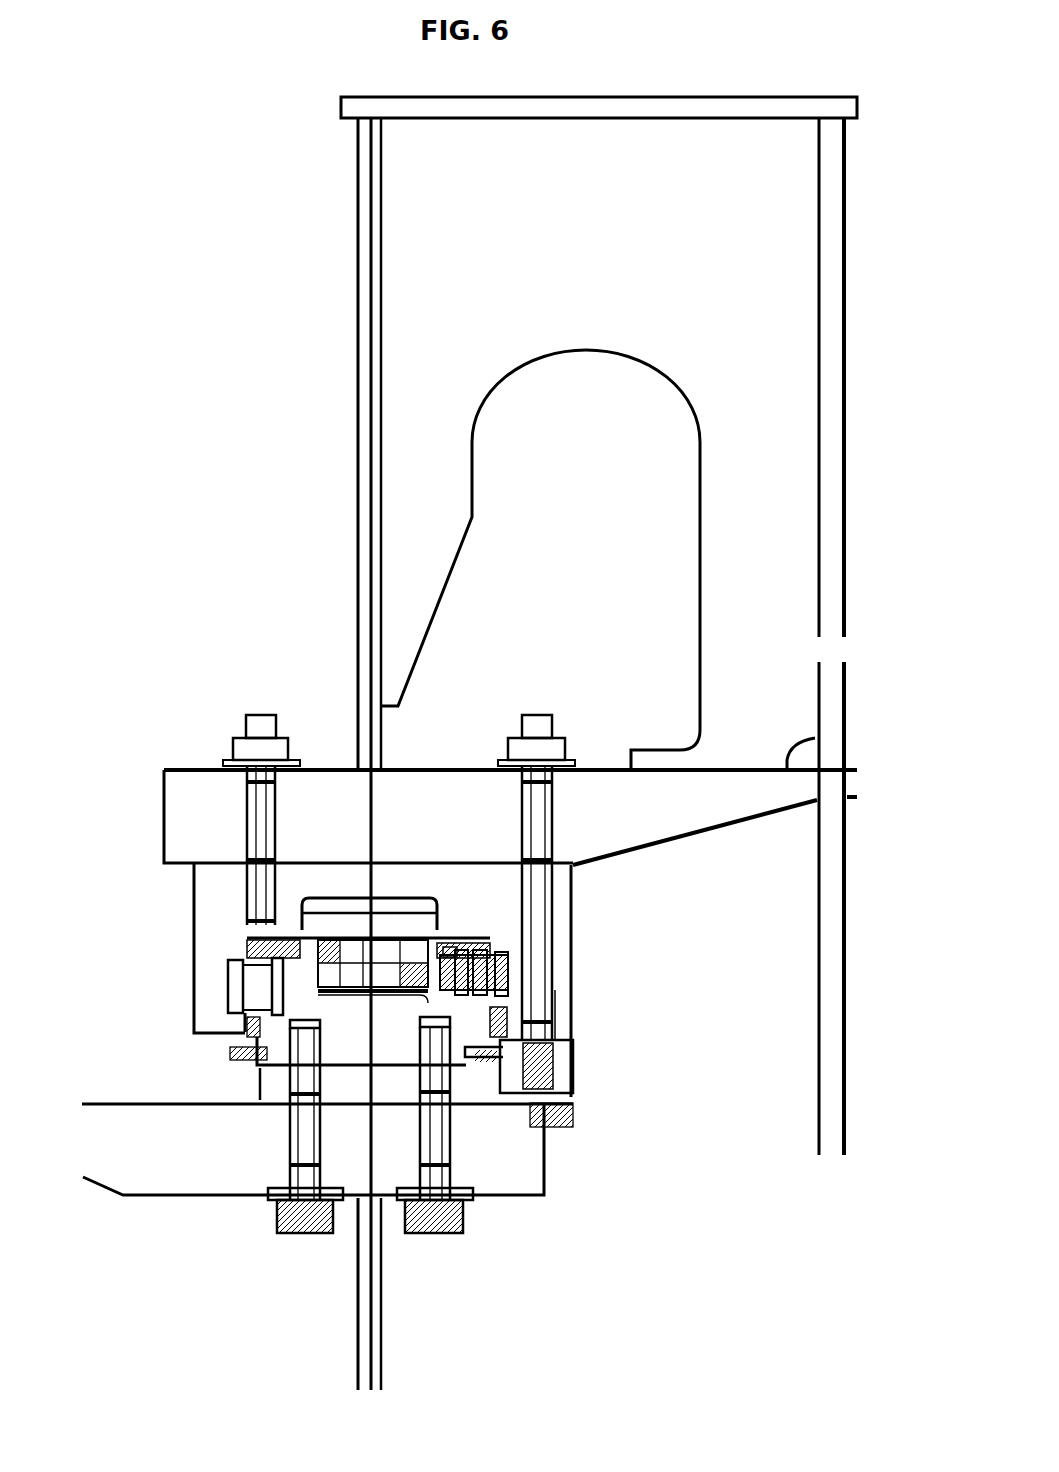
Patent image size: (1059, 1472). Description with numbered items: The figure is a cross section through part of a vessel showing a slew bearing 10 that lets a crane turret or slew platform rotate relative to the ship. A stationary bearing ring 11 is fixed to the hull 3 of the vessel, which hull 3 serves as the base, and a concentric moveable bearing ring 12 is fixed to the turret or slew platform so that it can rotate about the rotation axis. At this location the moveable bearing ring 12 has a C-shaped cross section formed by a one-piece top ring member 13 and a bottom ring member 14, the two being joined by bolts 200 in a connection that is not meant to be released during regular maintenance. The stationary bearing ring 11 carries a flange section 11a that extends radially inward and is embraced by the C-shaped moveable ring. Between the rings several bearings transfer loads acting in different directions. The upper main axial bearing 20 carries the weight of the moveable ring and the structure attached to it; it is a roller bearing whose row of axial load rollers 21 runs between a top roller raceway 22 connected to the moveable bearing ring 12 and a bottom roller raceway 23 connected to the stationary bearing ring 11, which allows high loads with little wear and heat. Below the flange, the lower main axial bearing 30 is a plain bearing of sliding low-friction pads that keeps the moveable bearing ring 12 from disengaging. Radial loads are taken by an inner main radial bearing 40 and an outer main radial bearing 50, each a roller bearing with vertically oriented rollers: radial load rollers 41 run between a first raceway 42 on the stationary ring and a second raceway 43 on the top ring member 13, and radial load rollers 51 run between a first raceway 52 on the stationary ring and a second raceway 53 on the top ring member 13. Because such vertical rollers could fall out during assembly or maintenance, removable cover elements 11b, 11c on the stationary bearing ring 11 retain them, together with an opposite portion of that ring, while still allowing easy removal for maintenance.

The hull 3 is at (210, 1173).
The slew bearing 10 is at (148, 720).
The stationary bearing ring 11 is at (390, 1080).
The flange section 11a is at (478, 1032).
The removable cover element 11b is at (472, 953).
The removable cover element 11c is at (262, 957).
The moveable bearing ring 12 is at (210, 878).
The top ring member 13 is at (563, 1018).
The bottom ring member 14 is at (560, 1063).
The upper main axial bearing 20 is at (368, 843).
The axial load rollers 21 is at (347, 952).
The top roller raceway 22 is at (432, 925).
The bottom roller raceway 23 is at (343, 995).
The lower main axial bearing 30 is at (482, 1070).
The inner main radial bearing 40 is at (567, 937).
The radial load rollers 41 is at (483, 992).
The first raceway 42 is at (462, 978).
The second raceway 43 is at (497, 1000).
The outer main radial bearing 50 is at (198, 970).
The radial load rollers 51 is at (257, 978).
The first raceway 52 is at (277, 997).
The second raceway 53 is at (238, 992).
The bolts 200 is at (545, 727).